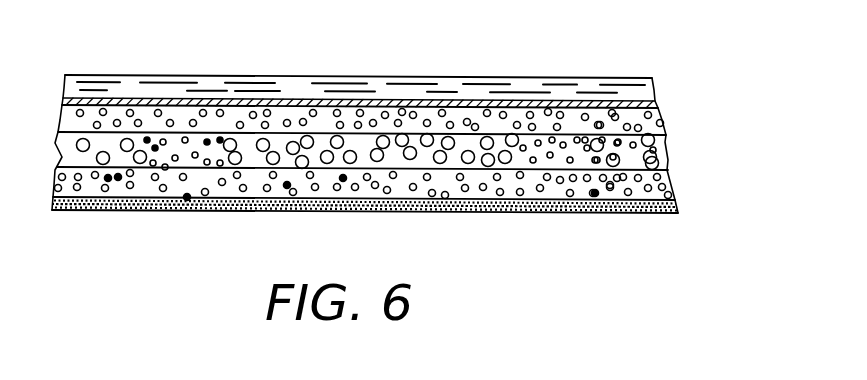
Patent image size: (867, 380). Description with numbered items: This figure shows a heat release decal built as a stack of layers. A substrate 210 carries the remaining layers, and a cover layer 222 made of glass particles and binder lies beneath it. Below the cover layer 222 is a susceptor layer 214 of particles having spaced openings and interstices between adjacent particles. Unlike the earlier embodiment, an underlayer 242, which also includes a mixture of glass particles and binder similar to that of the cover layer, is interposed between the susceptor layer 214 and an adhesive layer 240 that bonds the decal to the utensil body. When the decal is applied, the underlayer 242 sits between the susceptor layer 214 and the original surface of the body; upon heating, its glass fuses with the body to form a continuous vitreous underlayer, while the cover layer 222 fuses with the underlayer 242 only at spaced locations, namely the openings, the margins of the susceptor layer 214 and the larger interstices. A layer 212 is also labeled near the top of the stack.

The substrate 210 is at (192, 90).
The adhesive layer 212 is at (110, 106).
The cover layer 222 is at (290, 118).
The susceptor layer 214 is at (662, 152).
The underlayer 242 is at (668, 184).
The adhesive layer 240 is at (550, 211).